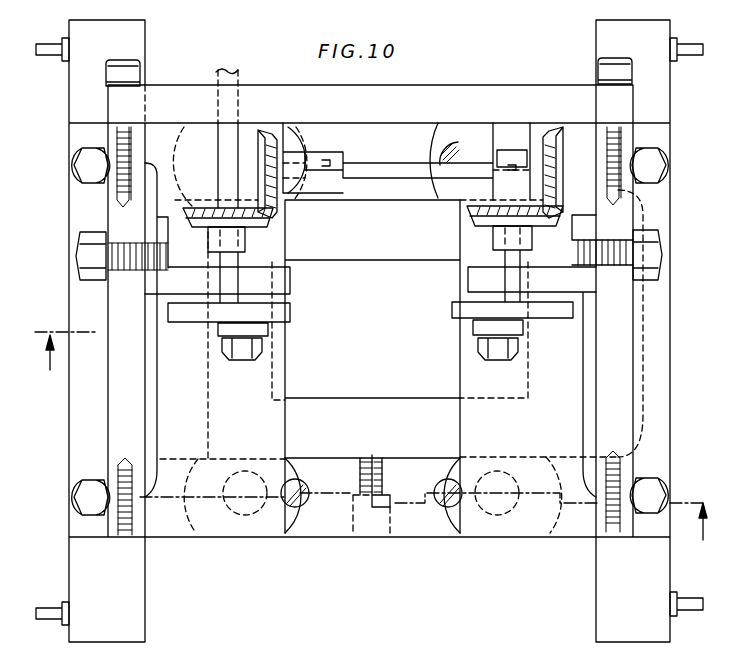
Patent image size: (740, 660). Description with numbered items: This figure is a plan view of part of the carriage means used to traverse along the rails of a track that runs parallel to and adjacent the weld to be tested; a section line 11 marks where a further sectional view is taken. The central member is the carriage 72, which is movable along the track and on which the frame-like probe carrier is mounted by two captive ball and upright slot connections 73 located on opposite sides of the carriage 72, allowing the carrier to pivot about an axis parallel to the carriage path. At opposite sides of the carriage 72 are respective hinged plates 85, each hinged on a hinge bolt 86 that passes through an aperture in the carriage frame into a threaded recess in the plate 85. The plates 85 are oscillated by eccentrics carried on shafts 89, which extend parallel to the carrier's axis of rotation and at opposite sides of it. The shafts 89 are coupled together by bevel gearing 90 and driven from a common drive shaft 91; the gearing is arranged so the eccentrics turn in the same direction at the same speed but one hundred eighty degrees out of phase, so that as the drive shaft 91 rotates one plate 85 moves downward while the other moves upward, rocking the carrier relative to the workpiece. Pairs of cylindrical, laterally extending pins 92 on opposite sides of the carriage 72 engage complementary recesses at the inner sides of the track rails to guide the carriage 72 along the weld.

The section line 11- 11 is at (379, 451).
The carriage 72 is at (437, 90).
The captive ball and upright slot connection 73 is at (373, 520).
The hinged plate 85 is at (370, 313).
The hinge bolt 86 is at (140, 68).
The shaft 89 is at (230, 260).
The bevel gearing 90 is at (280, 222).
The drive shaft 91 is at (236, 80).
The pin 92 is at (50, 49).